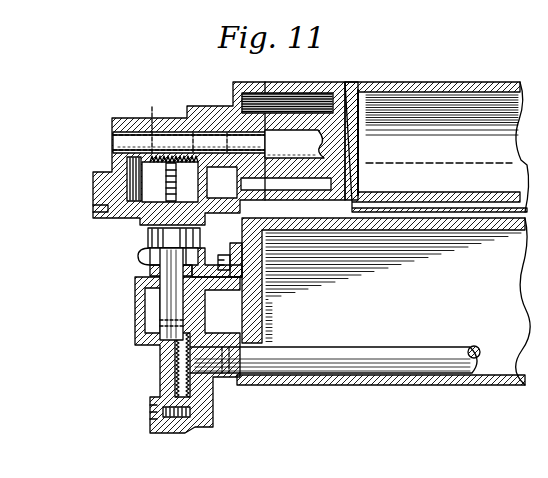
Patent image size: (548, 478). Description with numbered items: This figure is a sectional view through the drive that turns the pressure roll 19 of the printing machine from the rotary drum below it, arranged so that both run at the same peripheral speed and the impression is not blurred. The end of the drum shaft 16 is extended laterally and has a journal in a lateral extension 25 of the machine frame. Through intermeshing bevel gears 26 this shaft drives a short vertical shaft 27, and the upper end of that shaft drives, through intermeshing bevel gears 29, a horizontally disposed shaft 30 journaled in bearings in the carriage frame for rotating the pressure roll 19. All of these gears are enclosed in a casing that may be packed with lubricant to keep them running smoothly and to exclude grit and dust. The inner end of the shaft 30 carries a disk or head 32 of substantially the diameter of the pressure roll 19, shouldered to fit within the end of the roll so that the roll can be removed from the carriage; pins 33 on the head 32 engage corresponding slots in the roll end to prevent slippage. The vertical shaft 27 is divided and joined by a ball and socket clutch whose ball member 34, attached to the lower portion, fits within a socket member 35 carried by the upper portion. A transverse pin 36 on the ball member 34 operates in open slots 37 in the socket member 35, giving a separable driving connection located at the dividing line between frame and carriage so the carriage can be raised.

The drum shaft 16 is at (377, 364).
The pressure roll 19 is at (512, 73).
The lateral extension 25 is at (270, 300).
The bevel gears 26 is at (186, 352).
The vertical shaft 27 is at (167, 280).
The bevel gears 29 is at (187, 120).
The horizontally disposed shaft 30 is at (292, 142).
The disk or head 32 is at (362, 108).
The pins 33 is at (356, 97).
The ball member 34 is at (140, 253).
The socket member 35 is at (148, 238).
The transverse pin 36 is at (138, 263).
The open slots 37 is at (207, 249).